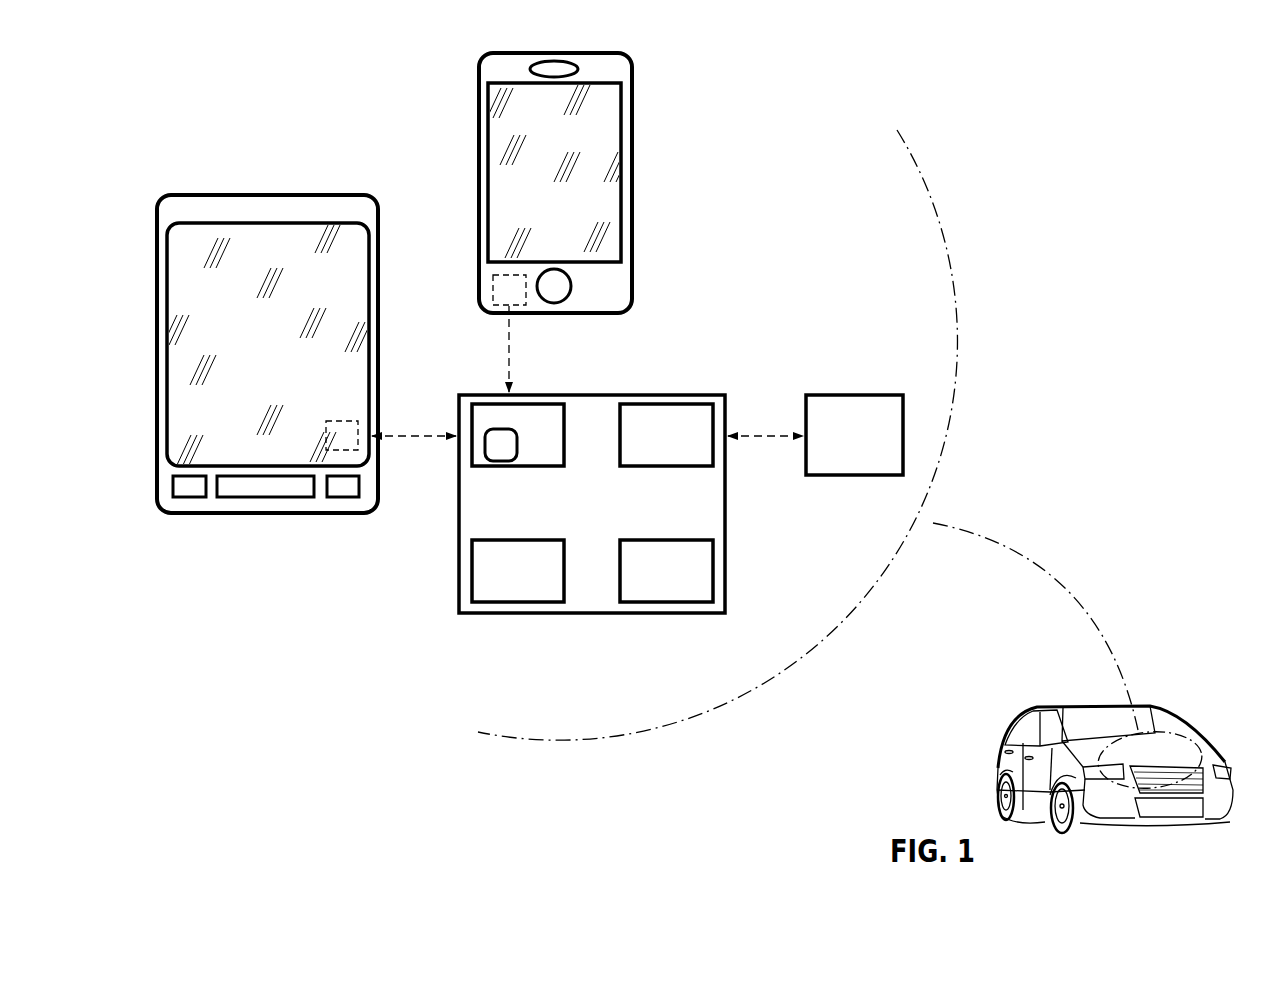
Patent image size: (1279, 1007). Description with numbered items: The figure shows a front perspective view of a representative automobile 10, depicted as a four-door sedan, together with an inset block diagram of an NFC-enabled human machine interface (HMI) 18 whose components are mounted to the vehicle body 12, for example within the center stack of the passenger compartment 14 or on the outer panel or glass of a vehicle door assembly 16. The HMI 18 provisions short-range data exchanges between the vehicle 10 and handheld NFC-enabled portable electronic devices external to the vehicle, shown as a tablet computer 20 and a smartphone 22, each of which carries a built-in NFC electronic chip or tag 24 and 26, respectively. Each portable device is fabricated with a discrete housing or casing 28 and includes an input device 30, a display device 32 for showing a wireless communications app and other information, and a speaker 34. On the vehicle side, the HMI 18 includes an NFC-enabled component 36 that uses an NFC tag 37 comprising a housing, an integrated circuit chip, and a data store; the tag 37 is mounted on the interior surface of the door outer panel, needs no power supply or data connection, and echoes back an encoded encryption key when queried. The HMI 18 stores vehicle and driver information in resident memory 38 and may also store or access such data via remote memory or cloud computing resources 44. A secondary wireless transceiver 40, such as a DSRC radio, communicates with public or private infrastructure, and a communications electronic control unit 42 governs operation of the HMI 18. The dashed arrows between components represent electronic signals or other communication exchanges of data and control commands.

The automobile 10 is at (1091, 703).
The body 12 is at (1207, 746).
The passenger compartment 14 is at (1052, 693).
The vehicle door assembly 16 is at (1027, 784).
The NFC-enabled HMI 18 is at (592, 624).
The tablet computer 20 is at (155, 211).
The smartphone 22 is at (477, 100).
The electronic chip or tag 24 is at (344, 421).
The electronic chip or tag 26 is at (493, 277).
The housing or casing 28 is at (486, 130).
The input device 30 is at (570, 279).
The display device 32 is at (568, 192).
The speaker 34 is at (533, 62).
The NFC-enabled component 36 is at (547, 402).
The NFC tag 37 is at (497, 462).
The resident memory 38 is at (537, 603).
The secondary wireless transceiver 40 is at (688, 402).
The communications electronic control unit 42 is at (693, 603).
The remote memory or cloud computing resources 44 is at (827, 395).